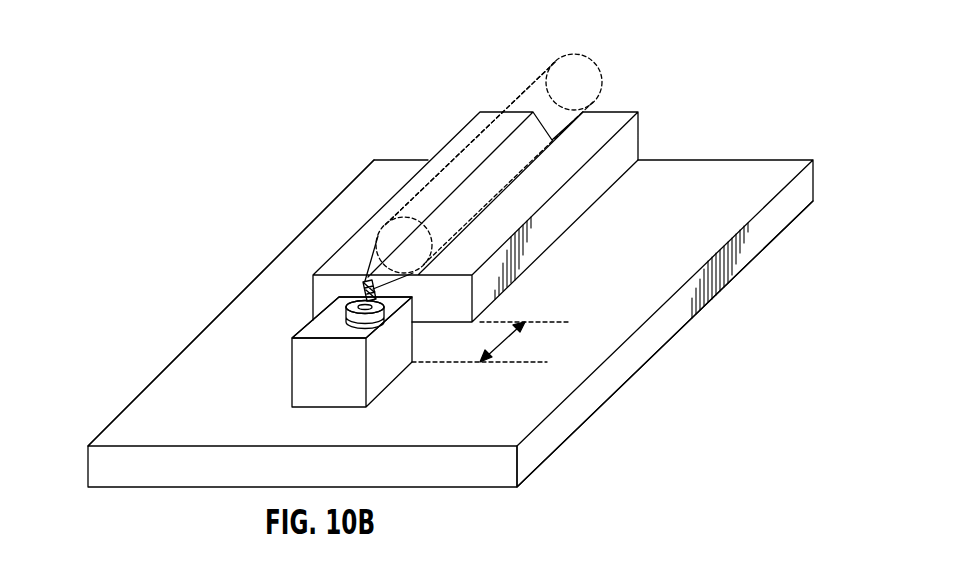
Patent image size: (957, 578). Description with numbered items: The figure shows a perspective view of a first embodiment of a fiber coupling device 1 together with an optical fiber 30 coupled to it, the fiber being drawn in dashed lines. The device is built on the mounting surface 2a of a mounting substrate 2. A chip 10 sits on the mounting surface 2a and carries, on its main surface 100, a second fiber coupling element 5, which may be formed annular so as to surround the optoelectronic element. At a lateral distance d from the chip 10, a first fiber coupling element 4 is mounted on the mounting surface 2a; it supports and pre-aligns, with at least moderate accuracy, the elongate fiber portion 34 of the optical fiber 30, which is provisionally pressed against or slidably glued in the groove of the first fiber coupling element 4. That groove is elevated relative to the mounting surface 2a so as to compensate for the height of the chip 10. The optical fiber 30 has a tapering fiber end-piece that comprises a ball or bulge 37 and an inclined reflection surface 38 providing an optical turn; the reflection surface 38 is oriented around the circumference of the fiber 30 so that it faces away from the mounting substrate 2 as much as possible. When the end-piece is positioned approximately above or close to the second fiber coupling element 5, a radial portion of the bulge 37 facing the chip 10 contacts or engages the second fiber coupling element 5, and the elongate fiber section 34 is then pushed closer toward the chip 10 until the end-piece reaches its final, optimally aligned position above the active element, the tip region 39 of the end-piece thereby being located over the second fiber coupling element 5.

The fiber coupling device 1 is at (682, 337).
The mounting substrate 2 is at (568, 383).
The mounting surface 2a is at (158, 396).
The first fiber coupling element 4 is at (592, 191).
The second fiber coupling element 5 is at (347, 317).
The chip 10 is at (302, 389).
The main surface 100 is at (312, 331).
The optical fiber 30 is at (423, 187).
The elongate fiber portion 34 is at (592, 83).
The bulge 37 is at (378, 322).
The inclined reflection surface 38 is at (362, 286).
The tapered fiber end 39 is at (372, 264).
The lateral distance d is at (507, 340).